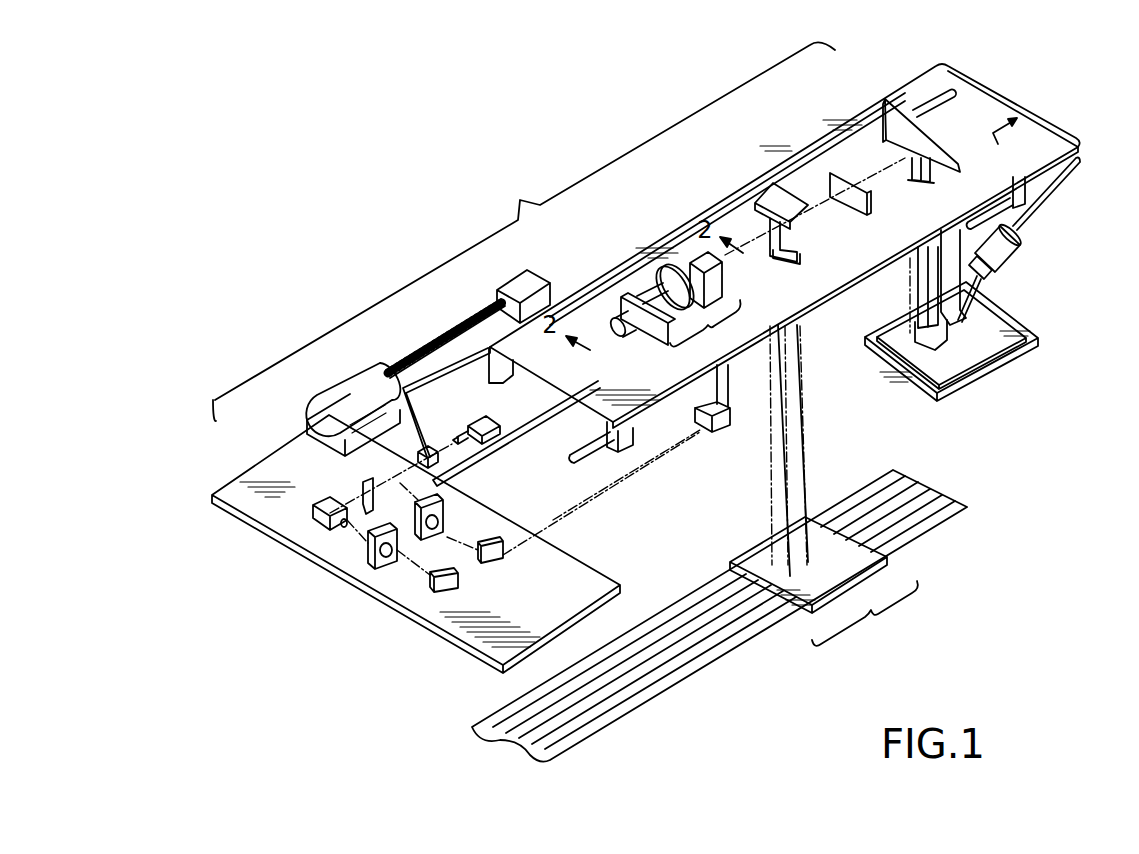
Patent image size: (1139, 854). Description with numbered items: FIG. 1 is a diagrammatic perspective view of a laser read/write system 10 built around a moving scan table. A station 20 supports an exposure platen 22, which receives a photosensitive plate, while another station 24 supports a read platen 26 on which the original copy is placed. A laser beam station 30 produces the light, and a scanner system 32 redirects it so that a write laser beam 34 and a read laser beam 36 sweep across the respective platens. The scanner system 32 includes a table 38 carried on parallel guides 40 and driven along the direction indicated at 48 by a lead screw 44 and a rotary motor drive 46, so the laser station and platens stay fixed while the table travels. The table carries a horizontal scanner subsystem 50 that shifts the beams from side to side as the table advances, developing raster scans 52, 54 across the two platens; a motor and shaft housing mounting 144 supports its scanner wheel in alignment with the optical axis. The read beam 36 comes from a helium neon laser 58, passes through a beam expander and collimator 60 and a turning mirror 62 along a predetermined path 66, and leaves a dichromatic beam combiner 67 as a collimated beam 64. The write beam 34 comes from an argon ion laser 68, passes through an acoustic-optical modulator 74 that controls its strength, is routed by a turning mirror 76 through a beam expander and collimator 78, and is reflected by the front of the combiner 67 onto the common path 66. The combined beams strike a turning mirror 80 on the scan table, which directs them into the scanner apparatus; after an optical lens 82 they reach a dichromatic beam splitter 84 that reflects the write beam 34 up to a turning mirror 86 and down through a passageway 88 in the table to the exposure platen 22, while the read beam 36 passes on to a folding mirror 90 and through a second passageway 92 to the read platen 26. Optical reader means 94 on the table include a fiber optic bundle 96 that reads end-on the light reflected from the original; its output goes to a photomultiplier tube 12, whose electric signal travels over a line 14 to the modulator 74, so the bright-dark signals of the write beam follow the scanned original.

The laser read/write system 10 is at (524, 231).
The photomultiplier tube 12 is at (1018, 241).
The line 14 is at (908, 82).
The station 20 is at (865, 613).
The exposure platen 22 is at (885, 548).
The station 24 is at (971, 388).
The read platen 26 is at (1000, 330).
The laser beam station 30 is at (211, 497).
The scanner system 32 is at (794, 180).
The write laser beam 34 is at (794, 240).
The read laser beam 36 is at (891, 177).
The table 38 is at (593, 402).
The parallel guides 40 is at (945, 97).
The lead screw 44 is at (553, 272).
The rotary motor drive 46 is at (349, 378).
The direction 48 is at (1018, 136).
The horizontal scanner subsystem 50 is at (681, 319).
The raster scan 52 is at (760, 557).
The raster scan 54 is at (905, 340).
The helium neon laser 58 is at (313, 518).
The beam expander and collimator 60 is at (372, 548).
The turning mirror 62 is at (430, 580).
The collimated beam 64 is at (573, 505).
The predetermined path 66 is at (540, 522).
The dichromatic beam combiner 67 is at (500, 553).
The argon ion laser 68 is at (487, 415).
The acoustic-optical modulator 74 is at (420, 457).
The turning mirror 76 is at (365, 488).
The beam expander and collimator 78 is at (446, 520).
The turning mirror 80 is at (735, 427).
The optical lens 82 is at (728, 278).
The dichromatic beam splitter 84 is at (830, 172).
The turning mirror 86 is at (765, 197).
The passageway 88 is at (790, 266).
The folding mirror 90 is at (886, 104).
The second passageway 92 is at (933, 176).
The optical reader means 94 is at (990, 283).
The fiber optic bundle 96 is at (941, 325).
The motor and shaft housing mounting 144 is at (614, 333).